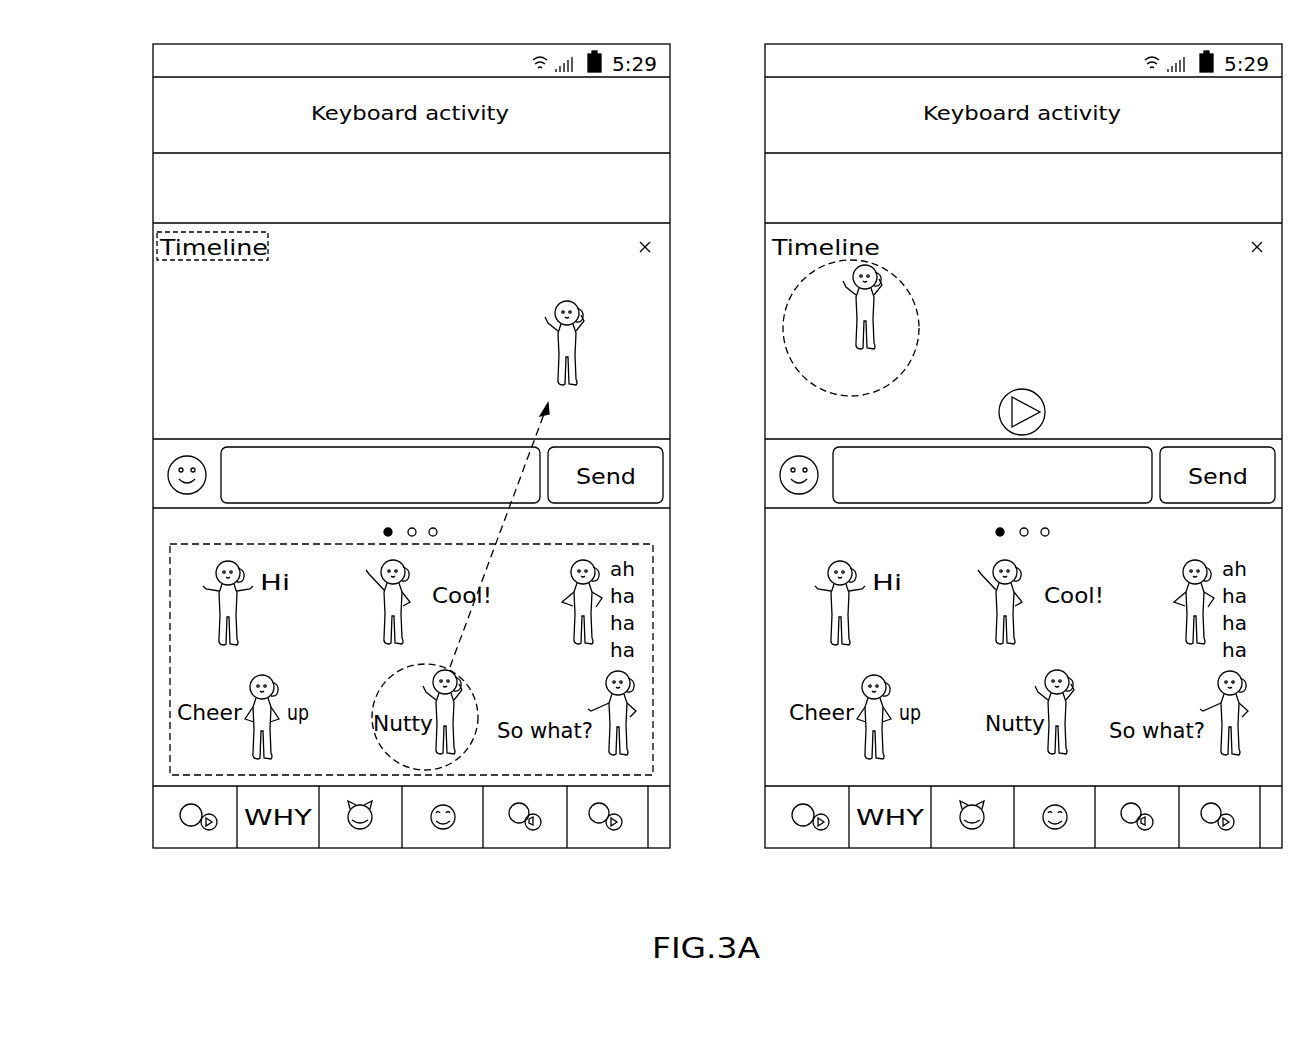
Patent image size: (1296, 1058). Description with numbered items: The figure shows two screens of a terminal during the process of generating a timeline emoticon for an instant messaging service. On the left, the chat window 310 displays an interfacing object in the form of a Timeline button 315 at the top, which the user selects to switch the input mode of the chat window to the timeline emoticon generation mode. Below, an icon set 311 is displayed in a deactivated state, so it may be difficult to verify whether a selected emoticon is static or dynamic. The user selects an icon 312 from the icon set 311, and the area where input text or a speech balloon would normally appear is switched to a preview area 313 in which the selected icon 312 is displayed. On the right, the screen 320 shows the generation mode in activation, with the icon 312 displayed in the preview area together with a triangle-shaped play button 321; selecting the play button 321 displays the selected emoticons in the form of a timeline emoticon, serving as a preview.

The chat window 310 is at (411, 849).
The icon set 311 is at (170, 549).
The icon 312 is at (474, 694).
The preview area 313 is at (637, 330).
The Timeline button 315 is at (270, 246).
The screen 320 is at (1022, 849).
The play button 321 is at (1043, 397).